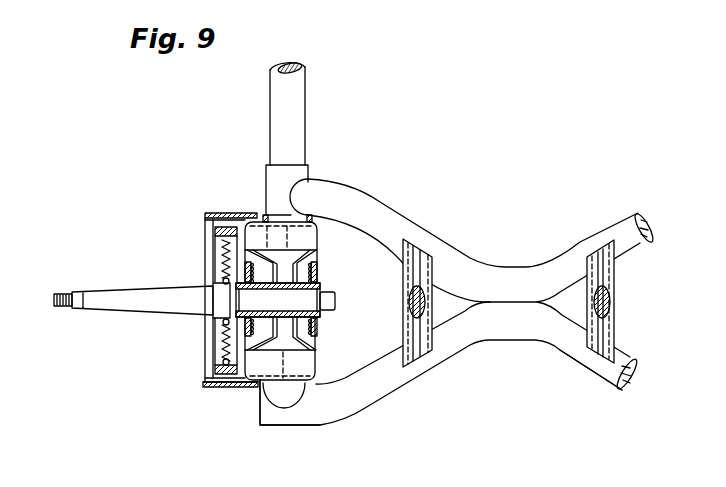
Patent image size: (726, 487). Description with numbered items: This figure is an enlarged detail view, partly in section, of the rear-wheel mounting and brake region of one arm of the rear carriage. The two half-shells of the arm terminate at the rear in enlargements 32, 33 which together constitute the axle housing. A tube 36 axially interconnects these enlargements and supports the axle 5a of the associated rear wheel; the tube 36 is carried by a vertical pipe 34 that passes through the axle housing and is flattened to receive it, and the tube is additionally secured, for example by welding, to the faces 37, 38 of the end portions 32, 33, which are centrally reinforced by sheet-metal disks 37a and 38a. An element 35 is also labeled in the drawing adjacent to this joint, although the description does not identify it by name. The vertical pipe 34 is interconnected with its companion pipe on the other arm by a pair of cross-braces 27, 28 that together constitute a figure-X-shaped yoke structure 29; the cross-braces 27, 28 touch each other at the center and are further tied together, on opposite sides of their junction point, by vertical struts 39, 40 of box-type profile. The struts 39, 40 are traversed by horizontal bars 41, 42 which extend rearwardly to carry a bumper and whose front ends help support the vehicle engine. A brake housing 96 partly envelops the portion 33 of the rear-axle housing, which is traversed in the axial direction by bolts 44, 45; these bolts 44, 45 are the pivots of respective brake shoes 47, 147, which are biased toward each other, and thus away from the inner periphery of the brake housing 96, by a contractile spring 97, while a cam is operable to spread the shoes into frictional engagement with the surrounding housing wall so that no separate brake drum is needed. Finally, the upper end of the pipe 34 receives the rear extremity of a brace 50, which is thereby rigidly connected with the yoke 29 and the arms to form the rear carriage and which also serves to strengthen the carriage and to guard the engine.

The axle 5a is at (98, 293).
The cross-brace 27 is at (381, 202).
The cross-brace 28 is at (425, 378).
The yoke structure 29 is at (541, 350).
The enlargement 32 is at (322, 385).
The enlargement 33 is at (252, 388).
The pipe 34 is at (272, 172).
The lower seal 35 is at (318, 337).
The tube 36 is at (322, 285).
The face 37 is at (319, 330).
The sheet-metal disk 37a is at (318, 268).
The face 38 is at (227, 281).
The sheet-metal disk 38a is at (226, 325).
The vertical strut 39 is at (407, 357).
The vertical strut 40 is at (577, 243).
The horizontal bar 41 is at (422, 307).
The horizontal bar 42 is at (606, 309).
The bolt 44 is at (320, 222).
The bolt 45 is at (262, 372).
The brake shoe 47 is at (220, 374).
The brace 50 is at (305, 90).
The brake housing 96 is at (212, 213).
The contractile spring 97 is at (220, 333).
The brake shoe 147 is at (213, 239).